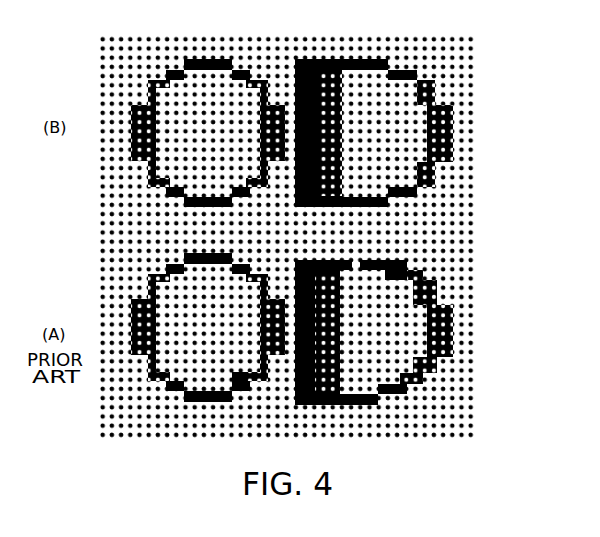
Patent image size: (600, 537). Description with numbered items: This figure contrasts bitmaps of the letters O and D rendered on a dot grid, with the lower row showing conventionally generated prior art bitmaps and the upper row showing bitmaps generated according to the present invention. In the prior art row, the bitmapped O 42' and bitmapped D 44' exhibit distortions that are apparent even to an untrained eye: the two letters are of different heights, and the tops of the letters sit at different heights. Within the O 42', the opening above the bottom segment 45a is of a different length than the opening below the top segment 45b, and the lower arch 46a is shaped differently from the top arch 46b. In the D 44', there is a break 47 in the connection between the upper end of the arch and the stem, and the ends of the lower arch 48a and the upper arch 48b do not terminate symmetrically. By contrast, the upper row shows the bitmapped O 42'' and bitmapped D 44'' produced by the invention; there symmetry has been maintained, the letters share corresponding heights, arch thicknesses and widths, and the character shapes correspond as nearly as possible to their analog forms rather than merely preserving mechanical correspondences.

The bitmapped O generated according to the present invention 42'' is at (111, 145).
The bitmapped D generated according to the present invention 44'' is at (458, 133).
The prior art bitmapped O 42' is at (111, 347).
The prior art bitmapped D 44' is at (448, 327).
The bottom segment of the O 45a is at (202, 404).
The top segment of the O 45b is at (197, 252).
The lower arch of the O 46a is at (252, 351).
The top arch of the O 46b is at (223, 274).
The break 47 is at (356, 262).
The lower arch of the D 48a is at (388, 382).
The upper arch of the D 48b is at (391, 281).